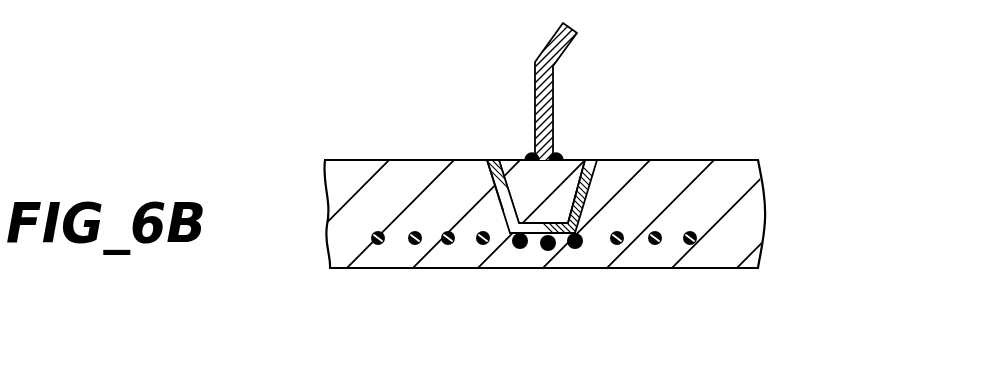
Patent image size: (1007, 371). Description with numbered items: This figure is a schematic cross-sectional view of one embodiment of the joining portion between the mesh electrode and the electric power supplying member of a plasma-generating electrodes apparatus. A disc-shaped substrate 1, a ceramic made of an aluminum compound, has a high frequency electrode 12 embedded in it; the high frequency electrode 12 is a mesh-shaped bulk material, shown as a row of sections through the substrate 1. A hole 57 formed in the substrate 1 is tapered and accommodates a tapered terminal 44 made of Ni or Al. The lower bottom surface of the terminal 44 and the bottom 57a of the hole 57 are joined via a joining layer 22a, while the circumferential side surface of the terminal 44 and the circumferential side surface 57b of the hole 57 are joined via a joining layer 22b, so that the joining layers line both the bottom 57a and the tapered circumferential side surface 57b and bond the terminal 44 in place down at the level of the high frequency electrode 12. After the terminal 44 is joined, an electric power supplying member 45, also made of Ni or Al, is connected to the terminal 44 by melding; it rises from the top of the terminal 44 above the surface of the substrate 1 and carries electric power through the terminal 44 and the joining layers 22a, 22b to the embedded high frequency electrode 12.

The substrate 1 is at (748, 174).
The high frequency electrode 12 is at (622, 243).
The joining layer 22a is at (541, 244).
The joining layer 22b is at (612, 172).
The terminal 44 is at (572, 168).
The electric power supplying member 45 is at (538, 62).
The hole 57 is at (508, 205).
The bottom of the hole 57a is at (551, 246).
The circumferential side surface of the hole 57b is at (513, 158).